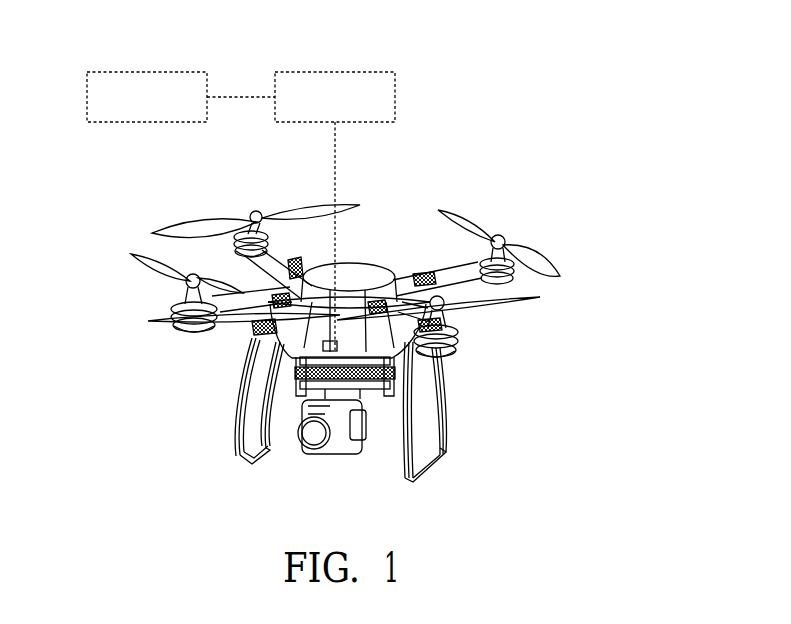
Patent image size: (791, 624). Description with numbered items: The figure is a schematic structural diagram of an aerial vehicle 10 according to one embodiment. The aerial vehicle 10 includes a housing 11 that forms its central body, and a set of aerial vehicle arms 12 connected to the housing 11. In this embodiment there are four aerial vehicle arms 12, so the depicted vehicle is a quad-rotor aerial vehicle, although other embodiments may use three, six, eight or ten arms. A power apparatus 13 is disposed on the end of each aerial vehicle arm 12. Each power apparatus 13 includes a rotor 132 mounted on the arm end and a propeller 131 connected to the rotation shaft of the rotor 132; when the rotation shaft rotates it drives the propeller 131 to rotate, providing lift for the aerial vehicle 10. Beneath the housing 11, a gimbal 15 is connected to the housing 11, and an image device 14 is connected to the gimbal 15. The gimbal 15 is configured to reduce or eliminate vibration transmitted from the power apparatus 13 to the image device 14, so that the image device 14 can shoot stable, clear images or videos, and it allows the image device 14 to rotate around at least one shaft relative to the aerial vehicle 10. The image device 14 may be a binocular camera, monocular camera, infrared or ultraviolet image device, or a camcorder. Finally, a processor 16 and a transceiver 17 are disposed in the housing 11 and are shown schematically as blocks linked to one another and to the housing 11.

The aerial vehicle 10 is at (590, 228).
The housing 11 is at (345, 330).
The aerial vehicle arm 12 is at (225, 333).
The power apparatus 13 is at (297, 301).
The propeller 131 is at (137, 256).
The rotor 132 is at (168, 304).
The image device 14 is at (300, 442).
The gimbal 15 is at (430, 400).
The processor 16 is at (335, 72).
The transceiver 17 is at (146, 72).